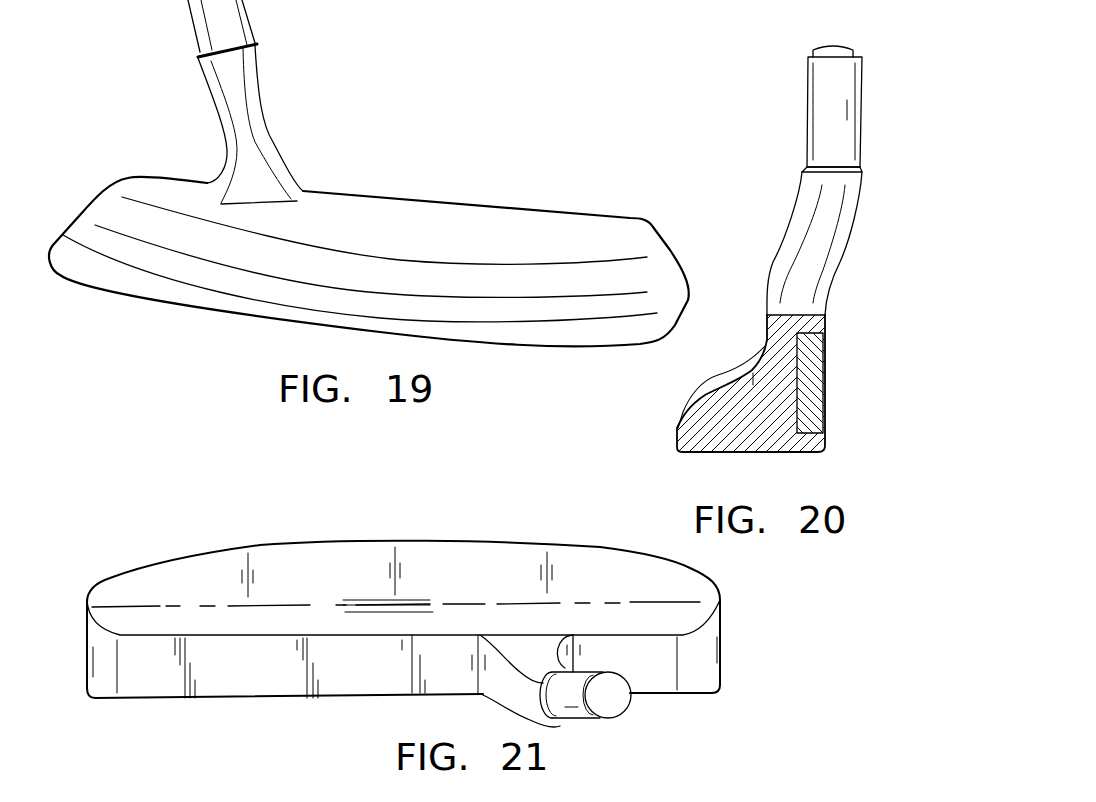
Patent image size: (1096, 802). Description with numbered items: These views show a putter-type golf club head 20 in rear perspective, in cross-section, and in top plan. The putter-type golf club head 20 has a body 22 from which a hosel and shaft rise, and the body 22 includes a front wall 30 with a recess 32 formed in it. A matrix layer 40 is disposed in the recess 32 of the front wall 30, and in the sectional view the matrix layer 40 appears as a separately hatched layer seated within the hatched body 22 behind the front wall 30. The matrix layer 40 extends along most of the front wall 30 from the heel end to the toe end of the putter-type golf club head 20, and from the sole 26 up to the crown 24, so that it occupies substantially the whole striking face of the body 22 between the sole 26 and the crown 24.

In FIG. 19, the putter-type golf club head 20 is at (425, 173).
In FIG. 20, the putter-type golf club head 20 is at (776, 192).
In FIG. 21, the putter-type golf club head 20 is at (449, 527).
In FIG. 19, the body 22 is at (243, 252).
In FIG. 21, the crown 24 is at (248, 665).
In FIG. 20, the sole 26 is at (713, 438).
In FIG. 20, the front wall 30 is at (826, 450).
In FIG. 20, the recess 32 is at (827, 333).
In FIG. 20, the matrix layer 40 is at (827, 370).